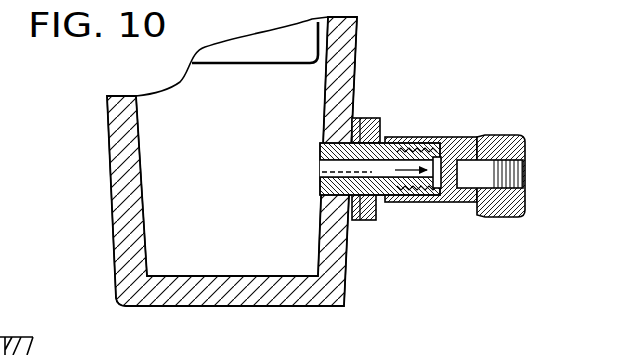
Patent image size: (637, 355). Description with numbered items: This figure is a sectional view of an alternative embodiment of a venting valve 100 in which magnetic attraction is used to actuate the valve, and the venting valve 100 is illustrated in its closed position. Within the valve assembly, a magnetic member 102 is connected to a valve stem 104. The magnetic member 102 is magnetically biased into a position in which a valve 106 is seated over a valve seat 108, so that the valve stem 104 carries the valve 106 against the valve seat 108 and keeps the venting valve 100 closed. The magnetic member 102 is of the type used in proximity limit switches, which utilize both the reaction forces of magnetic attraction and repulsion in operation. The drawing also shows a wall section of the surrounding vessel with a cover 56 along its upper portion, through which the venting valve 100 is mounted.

The cover/lid 56 is at (261, 52).
The venting valve 100 is at (405, 204).
The magnetic member 102 is at (326, 162).
The valve stem 104 is at (408, 142).
The valve 106 is at (441, 152).
The valve seat 108 is at (425, 207).